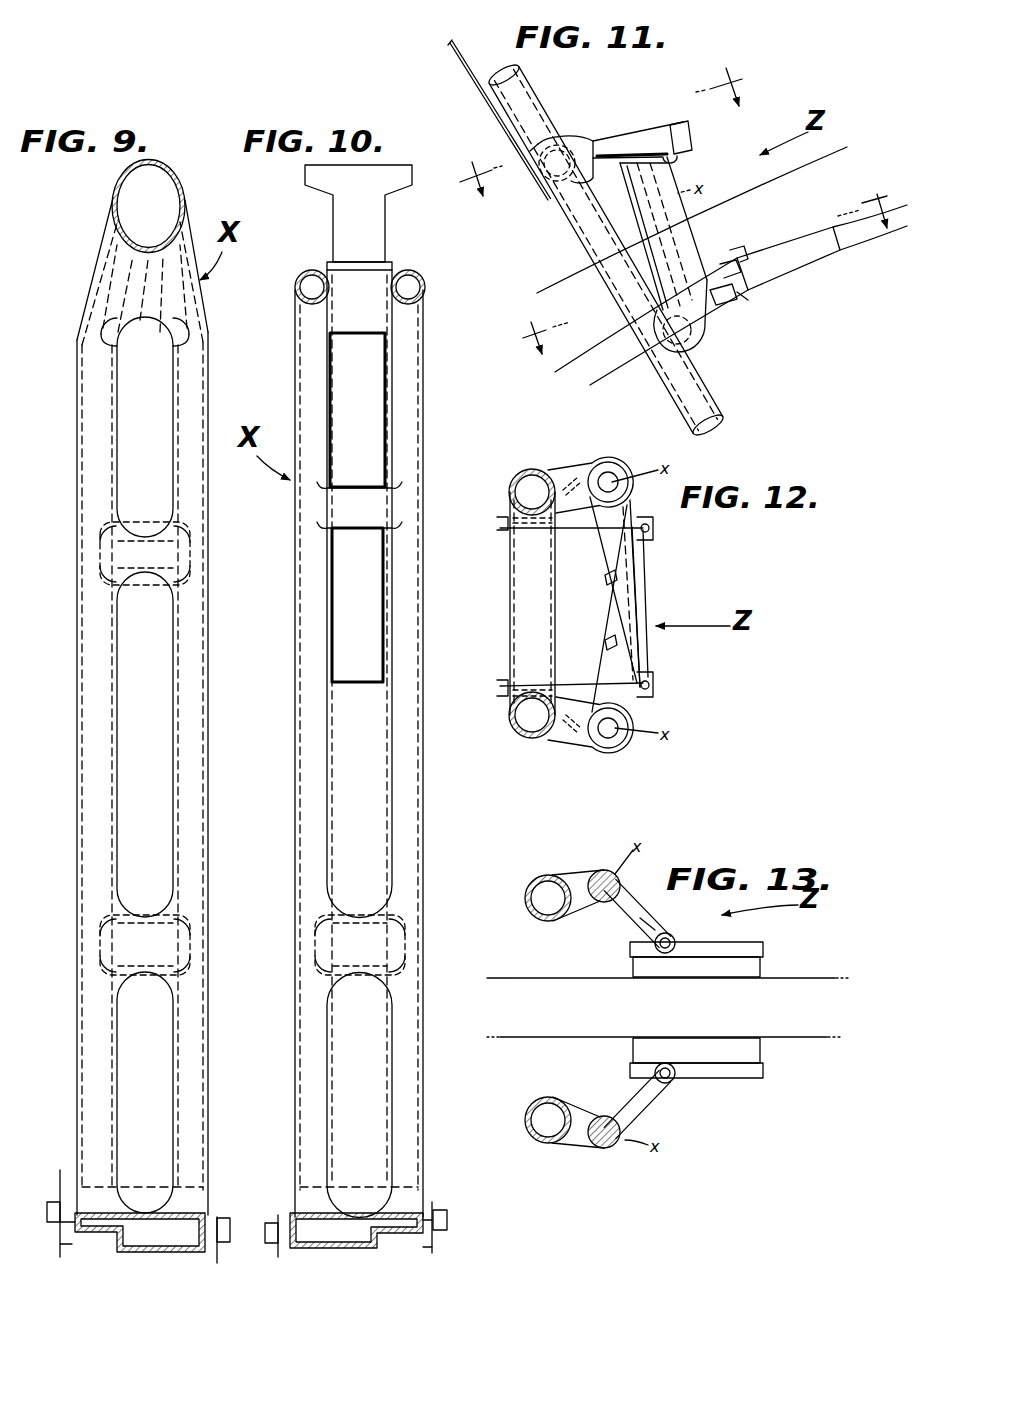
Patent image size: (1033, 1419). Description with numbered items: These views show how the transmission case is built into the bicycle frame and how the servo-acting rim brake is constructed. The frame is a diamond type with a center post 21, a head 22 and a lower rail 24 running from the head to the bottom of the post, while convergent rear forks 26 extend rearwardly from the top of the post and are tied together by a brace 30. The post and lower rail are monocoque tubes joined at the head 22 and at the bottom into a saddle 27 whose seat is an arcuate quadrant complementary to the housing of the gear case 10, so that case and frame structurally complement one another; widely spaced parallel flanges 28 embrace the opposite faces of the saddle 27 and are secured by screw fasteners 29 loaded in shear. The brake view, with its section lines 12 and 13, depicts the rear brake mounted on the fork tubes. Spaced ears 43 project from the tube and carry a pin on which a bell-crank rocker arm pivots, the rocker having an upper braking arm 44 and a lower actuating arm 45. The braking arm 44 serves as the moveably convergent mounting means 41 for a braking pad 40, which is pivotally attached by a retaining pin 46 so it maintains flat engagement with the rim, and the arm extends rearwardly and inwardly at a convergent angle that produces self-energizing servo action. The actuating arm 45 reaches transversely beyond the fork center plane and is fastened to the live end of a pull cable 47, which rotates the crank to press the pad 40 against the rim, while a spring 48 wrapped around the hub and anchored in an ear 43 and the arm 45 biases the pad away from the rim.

In FIG. 9, the gear case 10 is at (73, 1246).
In FIG. 10, the gear case 10 is at (412, 1247).
In FIG. 10, the center post 21 is at (405, 824).
In FIG. 9, the head 22 is at (113, 187).
In FIG. 9, the lower rail 24 is at (197, 742).
In FIG. 11, the rear forks 26 is at (542, 95).
In FIG. 12, the rear forks 26 is at (512, 734).
In FIG. 13, the rear forks 26 is at (527, 915).
In FIG. 9, the saddle 27 is at (191, 1212).
In FIG. 10, the saddle 27 is at (407, 1212).
In FIG. 9, the flanges 28 is at (60, 1182).
In FIG. 10, the flanges 28 is at (436, 1204).
In FIG. 9, the screw fasteners 29 is at (47, 1212).
In FIG. 10, the screw fasteners 29 is at (448, 1220).
In FIG. 12, the brace 30 is at (522, 592).
In FIG. 11, the braking pads 40 is at (808, 260).
In FIG. 13, the braking pads 40 is at (760, 966).
In FIG. 11, the moveably convergent mounting means 41 is at (748, 302).
In FIG. 13, the moveably convergent mounting means 41 is at (658, 913).
In FIG. 11, the ears 43 is at (584, 140).
In FIG. 12, the ears 43 is at (573, 470).
In FIG. 13, the ears 43 is at (568, 1148).
In FIG. 11, the braking arm 44 is at (692, 133).
In FIG. 12, the braking arm 44 is at (650, 568).
In FIG. 11, the actuating arm 45 is at (768, 290).
In FIG. 13, the actuating arm 45 is at (622, 910).
In FIG. 11, the retaining pin 46 is at (745, 247).
In FIG. 13, the retaining pin 46 is at (677, 940).
In FIG. 11, the pull cable 47 is at (453, 58).
In FIG. 12, the pull cable 47 is at (500, 525).
In FIG. 11, the spring 48 is at (650, 128).
In FIG. 11, the crank arms 12 is at (598, 124).
In FIG. 11, the pedals 13 is at (700, 262).